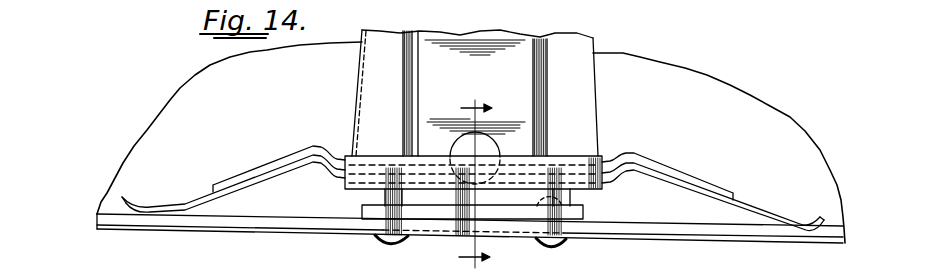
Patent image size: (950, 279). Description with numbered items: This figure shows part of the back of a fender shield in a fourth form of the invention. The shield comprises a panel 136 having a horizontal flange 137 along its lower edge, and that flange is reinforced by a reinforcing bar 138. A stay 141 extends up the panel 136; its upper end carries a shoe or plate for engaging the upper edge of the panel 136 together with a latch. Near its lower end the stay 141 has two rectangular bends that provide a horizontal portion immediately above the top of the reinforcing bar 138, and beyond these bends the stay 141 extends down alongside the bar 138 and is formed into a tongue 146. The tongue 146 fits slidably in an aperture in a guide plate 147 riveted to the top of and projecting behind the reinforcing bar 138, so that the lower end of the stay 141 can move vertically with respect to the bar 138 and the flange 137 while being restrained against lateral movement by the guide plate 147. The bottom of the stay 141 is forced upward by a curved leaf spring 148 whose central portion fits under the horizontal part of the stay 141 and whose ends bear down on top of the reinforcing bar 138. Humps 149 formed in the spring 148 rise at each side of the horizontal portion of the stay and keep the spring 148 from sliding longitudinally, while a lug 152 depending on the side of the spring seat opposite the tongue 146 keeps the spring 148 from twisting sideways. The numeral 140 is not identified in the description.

The panel 136 is at (780, 123).
The stay 141 is at (580, 59).
The right leaf spring 140 is at (623, 150).
The humps 149 is at (332, 151).
The curved leaf spring 148 is at (261, 175).
The lug 152 is at (448, 196).
The guide plate 147 is at (584, 216).
The tongue 146 is at (513, 228).
The reinforcing bar 138 is at (697, 233).
The horizontal flange 137 is at (776, 247).